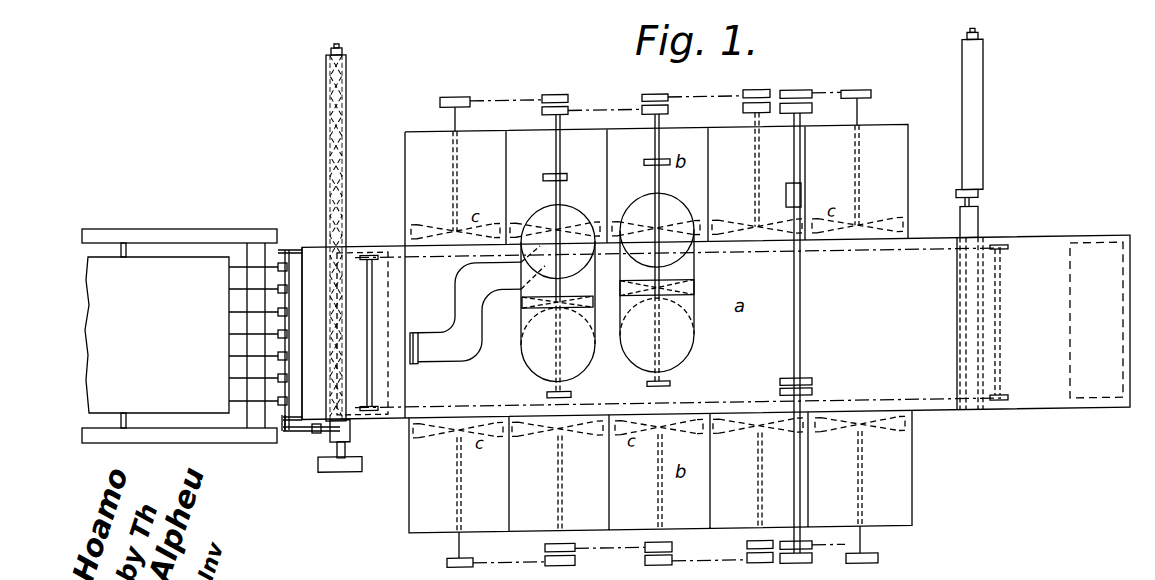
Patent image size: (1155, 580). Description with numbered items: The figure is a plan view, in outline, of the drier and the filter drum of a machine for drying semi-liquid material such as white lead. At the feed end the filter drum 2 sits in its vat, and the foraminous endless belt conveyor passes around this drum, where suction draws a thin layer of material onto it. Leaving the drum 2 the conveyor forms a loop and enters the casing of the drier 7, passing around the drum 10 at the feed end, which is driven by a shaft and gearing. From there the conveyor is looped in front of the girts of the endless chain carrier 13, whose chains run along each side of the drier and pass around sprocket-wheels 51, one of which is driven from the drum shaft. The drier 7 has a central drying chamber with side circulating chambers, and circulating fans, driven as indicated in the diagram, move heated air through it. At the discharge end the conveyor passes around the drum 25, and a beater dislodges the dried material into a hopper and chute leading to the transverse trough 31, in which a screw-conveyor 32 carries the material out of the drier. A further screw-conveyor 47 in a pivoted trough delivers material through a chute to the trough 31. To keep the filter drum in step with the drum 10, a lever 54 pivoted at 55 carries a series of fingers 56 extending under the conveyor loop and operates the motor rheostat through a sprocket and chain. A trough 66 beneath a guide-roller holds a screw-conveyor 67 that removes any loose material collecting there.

The drum 2 is at (157, 335).
The drier 7 is at (656, 328).
The drum 10 is at (413, 390).
The endless chain carrier 13 is at (400, 414).
The drum 25 is at (1096, 320).
The transverse trough 31 is at (983, 211).
The screw-conveyor 32 is at (978, 139).
The screw-conveyor 47 is at (978, 233).
The sprocket-wheels 51 is at (1003, 406).
The lever 54 is at (302, 431).
The pivot 55 is at (289, 300).
The fingers 56 is at (238, 288).
The trough 66 is at (326, 190).
The screw-conveyor 67 is at (344, 106).